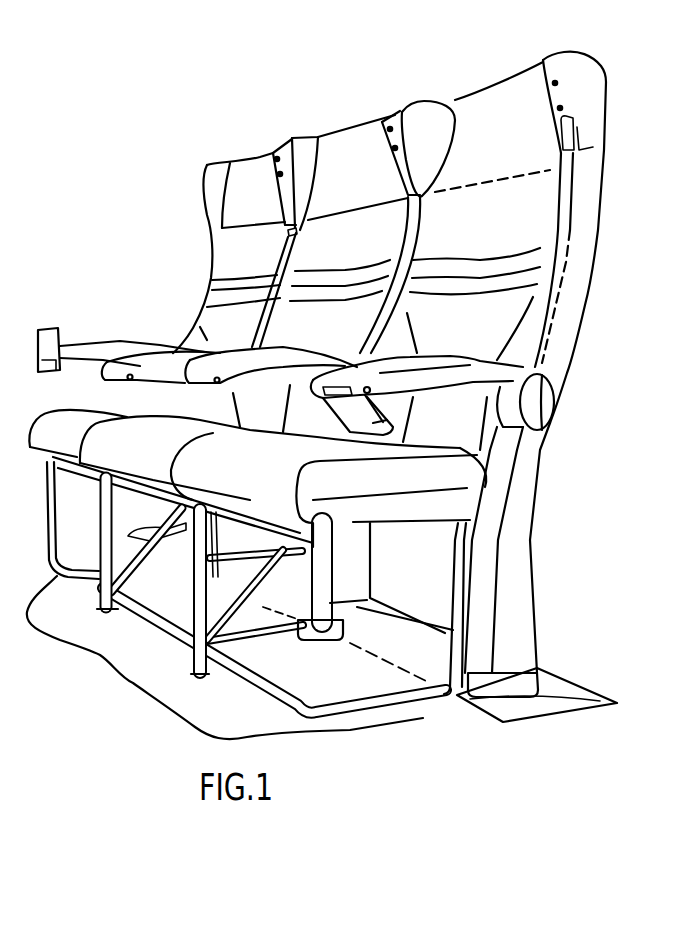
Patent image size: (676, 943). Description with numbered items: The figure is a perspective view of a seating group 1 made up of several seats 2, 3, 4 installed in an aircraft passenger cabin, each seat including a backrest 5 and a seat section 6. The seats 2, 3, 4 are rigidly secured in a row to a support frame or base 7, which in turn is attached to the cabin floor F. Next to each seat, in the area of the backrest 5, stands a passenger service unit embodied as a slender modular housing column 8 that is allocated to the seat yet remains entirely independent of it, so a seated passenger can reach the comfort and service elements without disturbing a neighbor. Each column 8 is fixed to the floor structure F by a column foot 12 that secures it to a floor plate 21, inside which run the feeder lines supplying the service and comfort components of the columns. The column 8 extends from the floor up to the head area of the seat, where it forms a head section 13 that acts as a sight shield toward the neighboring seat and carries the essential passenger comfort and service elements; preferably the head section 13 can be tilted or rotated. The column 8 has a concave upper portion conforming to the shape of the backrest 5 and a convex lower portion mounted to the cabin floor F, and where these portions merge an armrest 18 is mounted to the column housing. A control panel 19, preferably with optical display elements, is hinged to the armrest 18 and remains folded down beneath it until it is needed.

The seating group 1 is at (180, 249).
The seat 2 is at (245, 175).
The seat 3 is at (343, 157).
The seat 4 is at (477, 113).
The backrest 5 is at (478, 233).
The seat section 6 is at (244, 485).
The support frame or base 7 is at (163, 657).
The modular housing column 8 is at (288, 145).
The column foot 12 is at (517, 690).
The head section 13 is at (593, 94).
The armrest 18 is at (477, 367).
The control panel 19 is at (50, 333).
The floor plate 21 is at (433, 637).
The cabin floor F is at (297, 725).